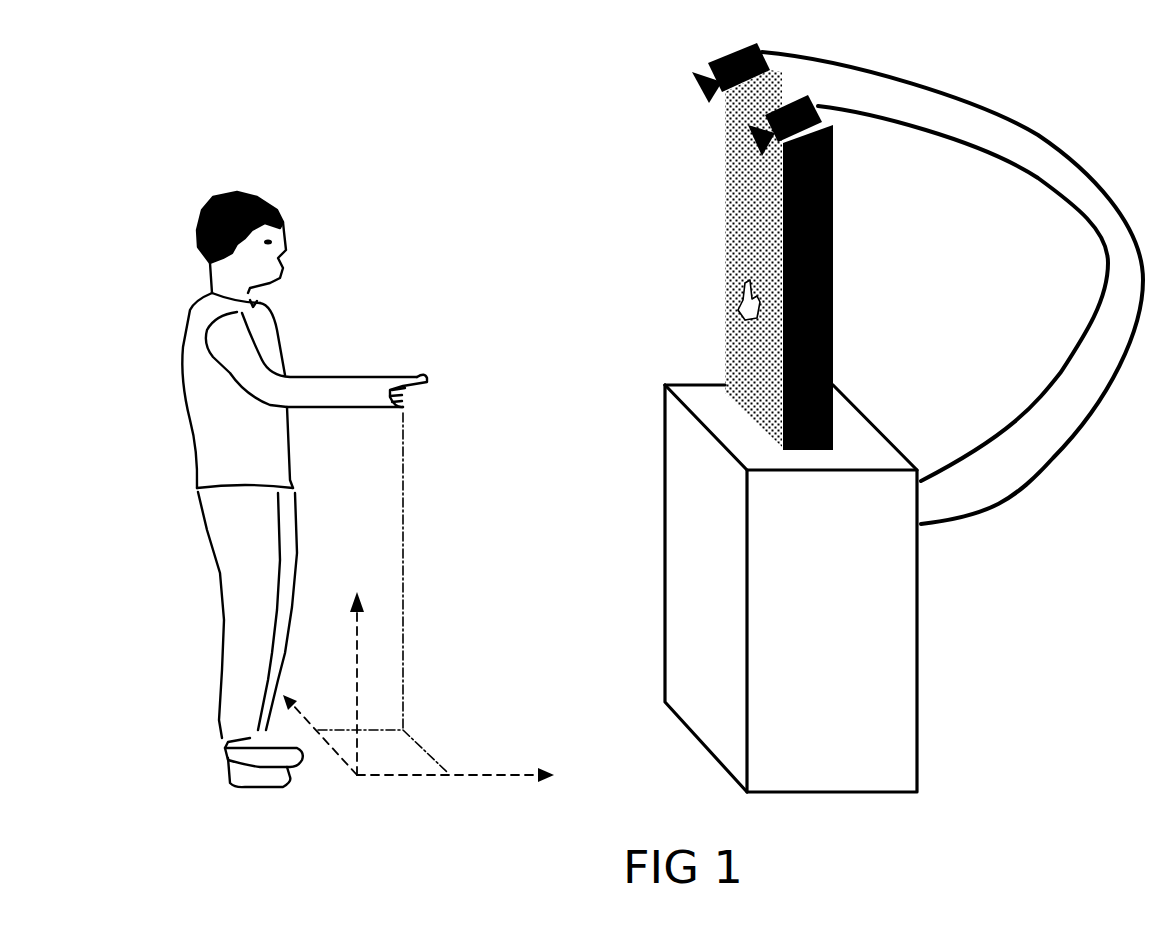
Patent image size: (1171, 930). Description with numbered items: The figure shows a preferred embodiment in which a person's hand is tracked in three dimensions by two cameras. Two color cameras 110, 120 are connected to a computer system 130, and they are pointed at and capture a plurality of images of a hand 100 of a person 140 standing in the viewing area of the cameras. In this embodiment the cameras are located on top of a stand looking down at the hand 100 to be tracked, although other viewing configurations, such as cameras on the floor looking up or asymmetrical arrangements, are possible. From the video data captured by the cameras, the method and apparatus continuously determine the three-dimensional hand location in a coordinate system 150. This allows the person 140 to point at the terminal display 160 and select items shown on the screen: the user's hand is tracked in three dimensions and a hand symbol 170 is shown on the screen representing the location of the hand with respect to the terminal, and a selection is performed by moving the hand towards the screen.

The hand 100 is at (420, 373).
The color camera 110 is at (706, 72).
The color camera 120 is at (820, 143).
The computer system 130 is at (833, 710).
The person 140 is at (212, 200).
The coordinate system 150 is at (341, 789).
The terminal display 160 is at (825, 250).
The hand symbol 170 is at (743, 303).